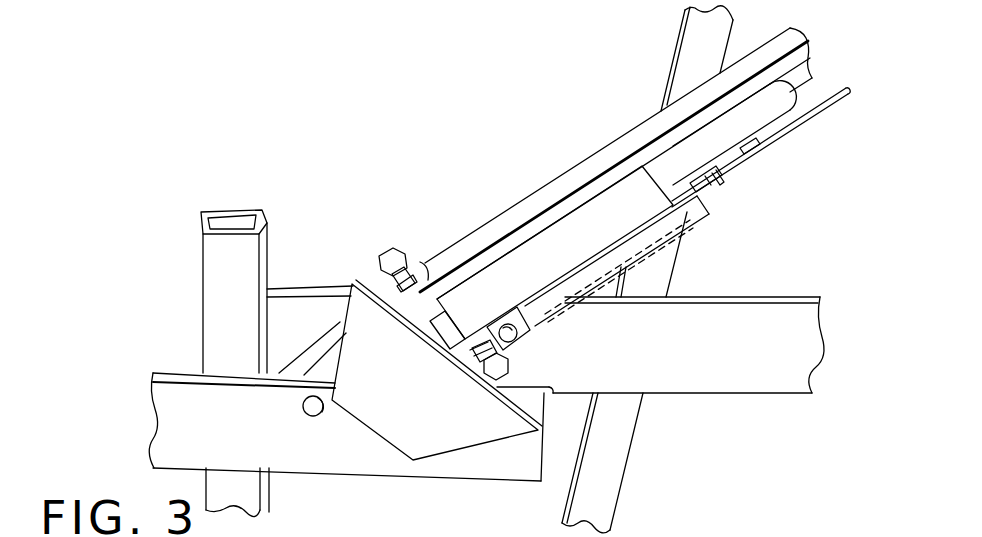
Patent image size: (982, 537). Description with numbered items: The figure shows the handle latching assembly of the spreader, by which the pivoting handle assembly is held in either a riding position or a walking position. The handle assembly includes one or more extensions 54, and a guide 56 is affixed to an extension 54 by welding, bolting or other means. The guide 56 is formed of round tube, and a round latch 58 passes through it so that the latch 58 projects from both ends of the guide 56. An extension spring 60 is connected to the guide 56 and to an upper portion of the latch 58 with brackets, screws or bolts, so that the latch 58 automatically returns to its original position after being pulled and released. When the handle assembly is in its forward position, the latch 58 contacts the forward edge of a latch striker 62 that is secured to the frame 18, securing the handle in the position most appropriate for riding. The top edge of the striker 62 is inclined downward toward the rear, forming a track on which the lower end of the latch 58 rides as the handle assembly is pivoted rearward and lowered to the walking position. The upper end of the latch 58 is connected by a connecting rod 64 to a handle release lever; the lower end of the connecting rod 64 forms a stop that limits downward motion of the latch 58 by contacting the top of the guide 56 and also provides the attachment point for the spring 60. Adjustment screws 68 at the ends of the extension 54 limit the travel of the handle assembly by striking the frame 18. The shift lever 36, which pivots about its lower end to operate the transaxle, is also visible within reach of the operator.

The frame 18 is at (223, 436).
The shift lever 36 is at (672, 62).
The extension 54 is at (557, 185).
The guide 56 is at (575, 258).
The latch 58 is at (727, 150).
The extension spring 60 is at (650, 247).
The latch striker 62 is at (451, 421).
The connecting rod 64 is at (817, 118).
The adjustment screws 68 is at (396, 254).